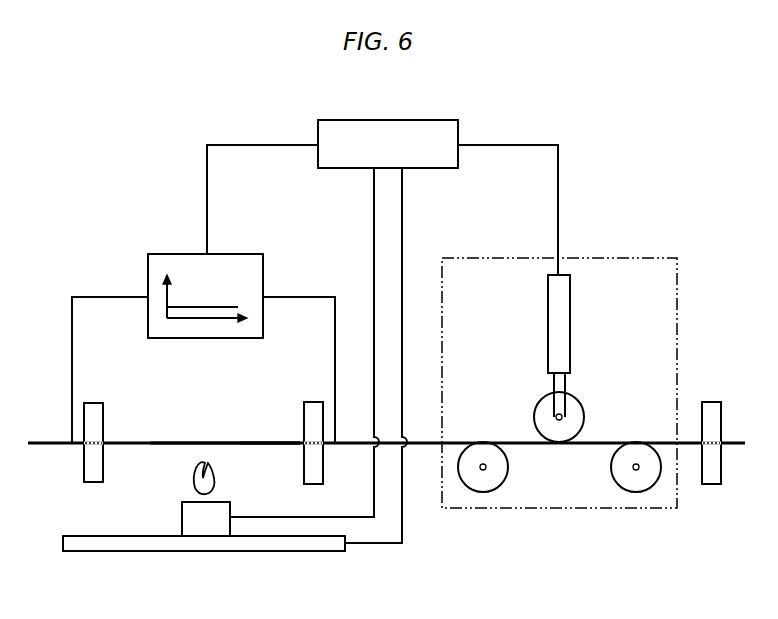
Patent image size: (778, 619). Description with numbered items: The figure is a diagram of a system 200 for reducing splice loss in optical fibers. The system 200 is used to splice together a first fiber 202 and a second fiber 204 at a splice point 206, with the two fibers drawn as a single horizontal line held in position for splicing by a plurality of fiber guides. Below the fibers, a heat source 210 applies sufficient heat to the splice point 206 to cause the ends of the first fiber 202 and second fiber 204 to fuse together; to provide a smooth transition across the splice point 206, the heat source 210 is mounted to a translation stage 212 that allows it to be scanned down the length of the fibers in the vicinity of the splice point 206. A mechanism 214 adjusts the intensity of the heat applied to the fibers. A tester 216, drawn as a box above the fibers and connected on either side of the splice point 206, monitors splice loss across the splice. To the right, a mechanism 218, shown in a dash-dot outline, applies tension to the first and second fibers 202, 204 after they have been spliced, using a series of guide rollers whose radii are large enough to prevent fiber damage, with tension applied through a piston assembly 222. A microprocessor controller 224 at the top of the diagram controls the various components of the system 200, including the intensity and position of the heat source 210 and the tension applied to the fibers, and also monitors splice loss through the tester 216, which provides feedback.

The system 200 is at (616, 130).
The first fiber 202 is at (45, 440).
The second fiber 204 is at (260, 440).
The splice point 206 is at (200, 440).
The heat source 210 is at (193, 482).
The translation stage 212 is at (90, 536).
The mechanism for adjusting intensity 214 is at (182, 518).
The tester 216 is at (178, 254).
The mechanism for applying tension 218 is at (612, 258).
The piston assembly 222 is at (570, 322).
The microprocessor controller 224 is at (384, 120).